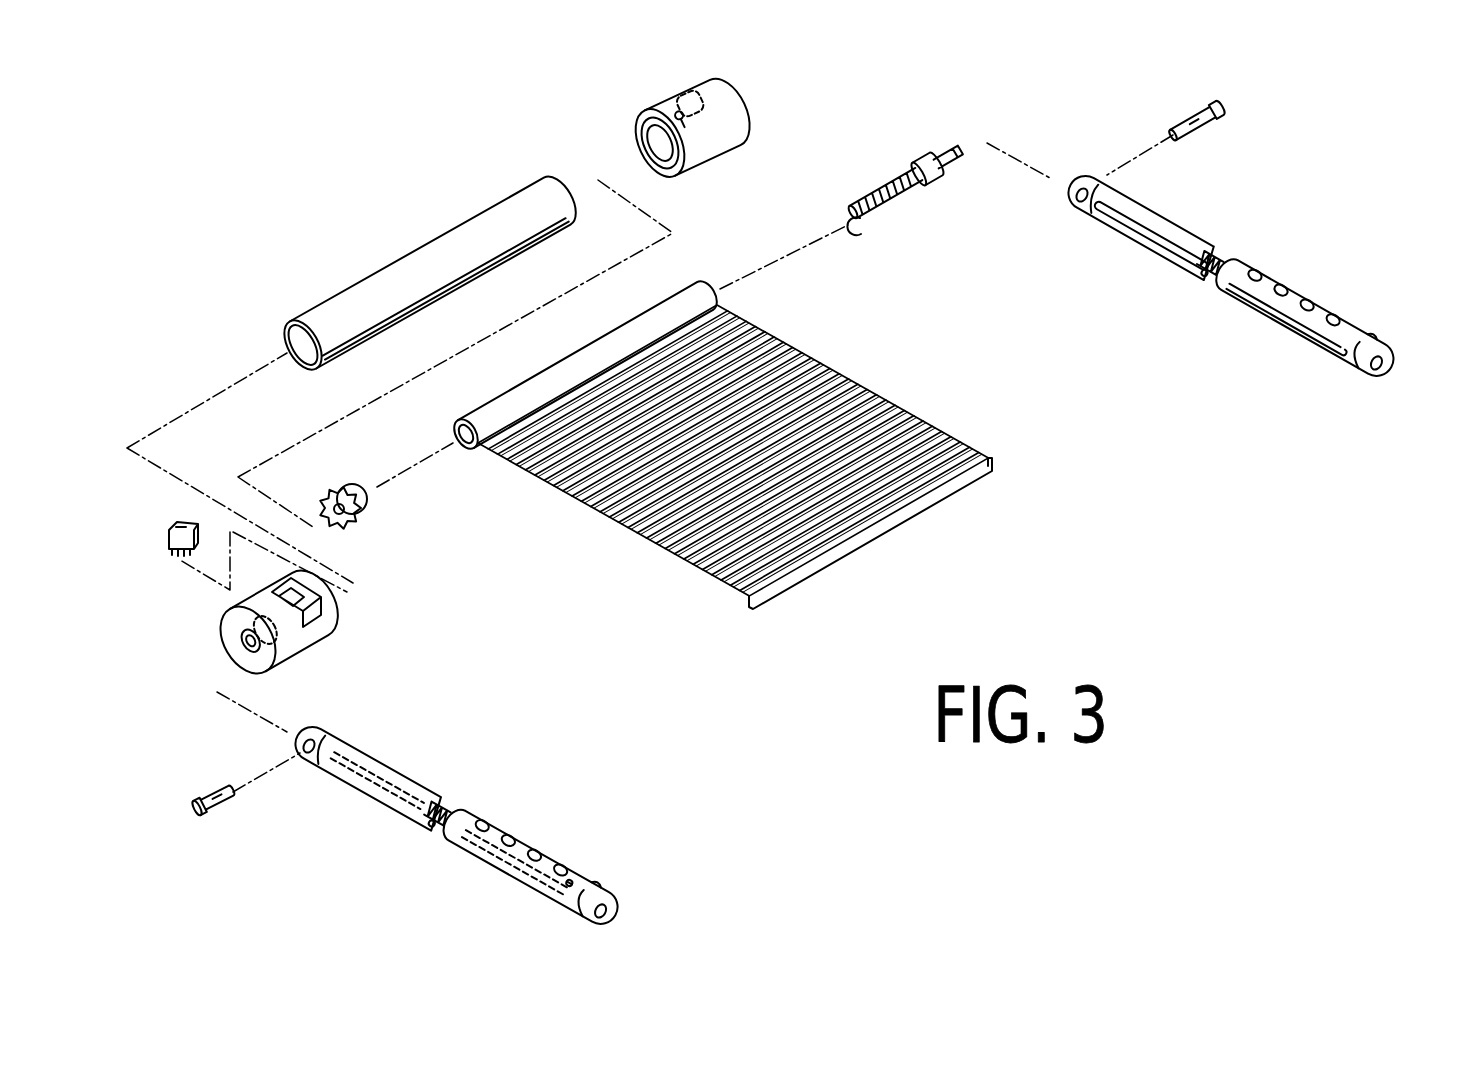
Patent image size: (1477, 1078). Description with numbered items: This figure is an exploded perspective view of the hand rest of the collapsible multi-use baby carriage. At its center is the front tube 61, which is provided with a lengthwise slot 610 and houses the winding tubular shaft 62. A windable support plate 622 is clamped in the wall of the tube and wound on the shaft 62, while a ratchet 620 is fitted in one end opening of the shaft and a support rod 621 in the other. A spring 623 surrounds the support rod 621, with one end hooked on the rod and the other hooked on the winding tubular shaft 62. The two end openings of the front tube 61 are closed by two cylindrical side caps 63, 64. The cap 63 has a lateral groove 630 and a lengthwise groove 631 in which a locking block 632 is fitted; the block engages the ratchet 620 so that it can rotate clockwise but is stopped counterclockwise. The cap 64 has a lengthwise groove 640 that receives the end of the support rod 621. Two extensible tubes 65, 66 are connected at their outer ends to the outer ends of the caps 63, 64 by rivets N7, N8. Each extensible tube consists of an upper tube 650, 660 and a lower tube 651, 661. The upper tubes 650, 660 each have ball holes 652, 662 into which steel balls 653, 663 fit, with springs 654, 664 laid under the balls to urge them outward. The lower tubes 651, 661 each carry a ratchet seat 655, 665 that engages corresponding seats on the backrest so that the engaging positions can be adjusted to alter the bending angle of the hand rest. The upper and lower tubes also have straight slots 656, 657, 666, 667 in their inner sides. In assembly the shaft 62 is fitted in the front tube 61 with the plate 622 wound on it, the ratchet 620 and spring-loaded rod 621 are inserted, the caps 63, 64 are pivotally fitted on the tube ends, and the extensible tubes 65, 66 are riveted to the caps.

The front tube 61 is at (414, 248).
The lengthwise slot 610 is at (455, 287).
The winding tubular shaft 62 is at (560, 355).
The ratchet 620 is at (374, 508).
The support rod 621 is at (928, 160).
The windable support plate 622 is at (912, 404).
The spring 623 is at (870, 224).
The side cap 63 is at (323, 645).
The lateral groove 630 is at (287, 650).
The lengthwise groove 631 is at (317, 587).
The locking block 632 is at (167, 542).
The side cap 64 is at (733, 148).
The lengthwise groove 640 is at (687, 137).
The extensible tube 65 is at (502, 821).
The upper tube 650 is at (377, 803).
The lower tube 651 is at (513, 880).
The ball holes 652 is at (507, 840).
The steel balls 653 is at (433, 797).
The springs 654 is at (433, 822).
The ratchet seat 655 is at (622, 905).
The straight slot 656 is at (400, 788).
The straight slot 657 is at (573, 882).
The extensible tube 66 is at (1263, 286).
The upper tube 660 is at (1188, 227).
The lower tube 661 is at (1330, 308).
The ball holes 662 is at (1288, 289).
The steel balls 663 is at (1210, 243).
The springs 664 is at (1210, 275).
The ratchet seat 665 is at (1374, 349).
The straight slot 666 is at (1163, 246).
The straight slot 667 is at (1288, 316).
The rivet N7 is at (207, 795).
The rivet N8 is at (1196, 118).